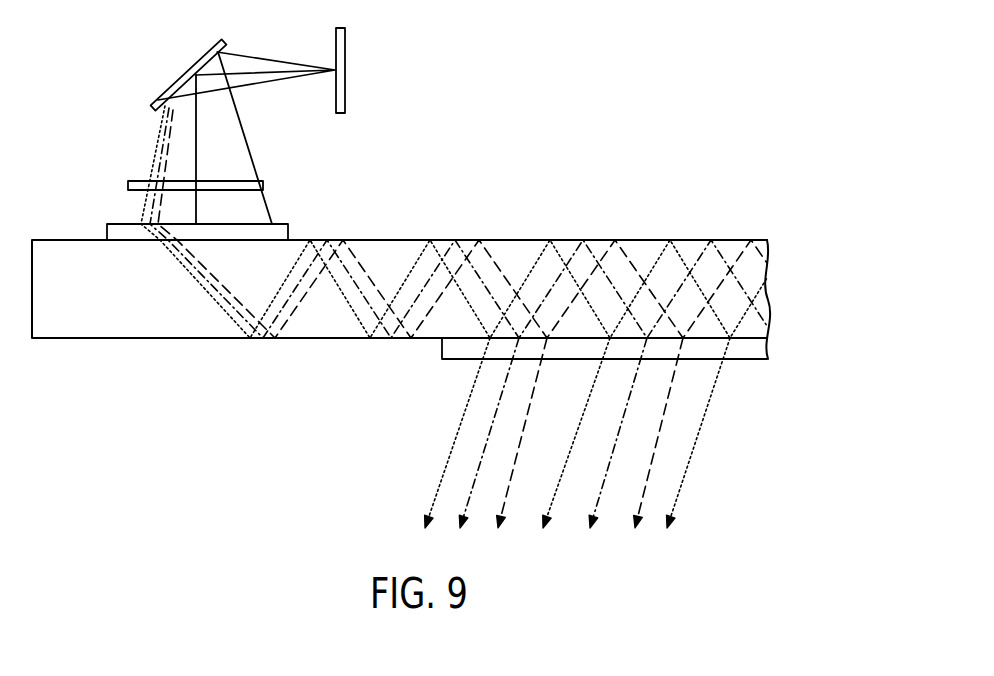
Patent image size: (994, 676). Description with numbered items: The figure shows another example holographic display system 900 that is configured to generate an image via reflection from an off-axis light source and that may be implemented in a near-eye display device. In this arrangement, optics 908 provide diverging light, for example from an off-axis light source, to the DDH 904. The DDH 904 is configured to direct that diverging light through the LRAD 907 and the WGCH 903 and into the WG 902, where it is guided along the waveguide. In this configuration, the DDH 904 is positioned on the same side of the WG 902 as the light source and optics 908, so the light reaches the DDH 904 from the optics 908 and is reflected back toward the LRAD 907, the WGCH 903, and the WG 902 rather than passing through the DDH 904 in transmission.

The holographic display system 900 is at (705, 66).
The WG 902 is at (32, 302).
The WGCH 903 is at (288, 224).
The DDH 904 is at (199, 62).
The LRAD 907 is at (261, 181).
The optics 908 is at (348, 57).